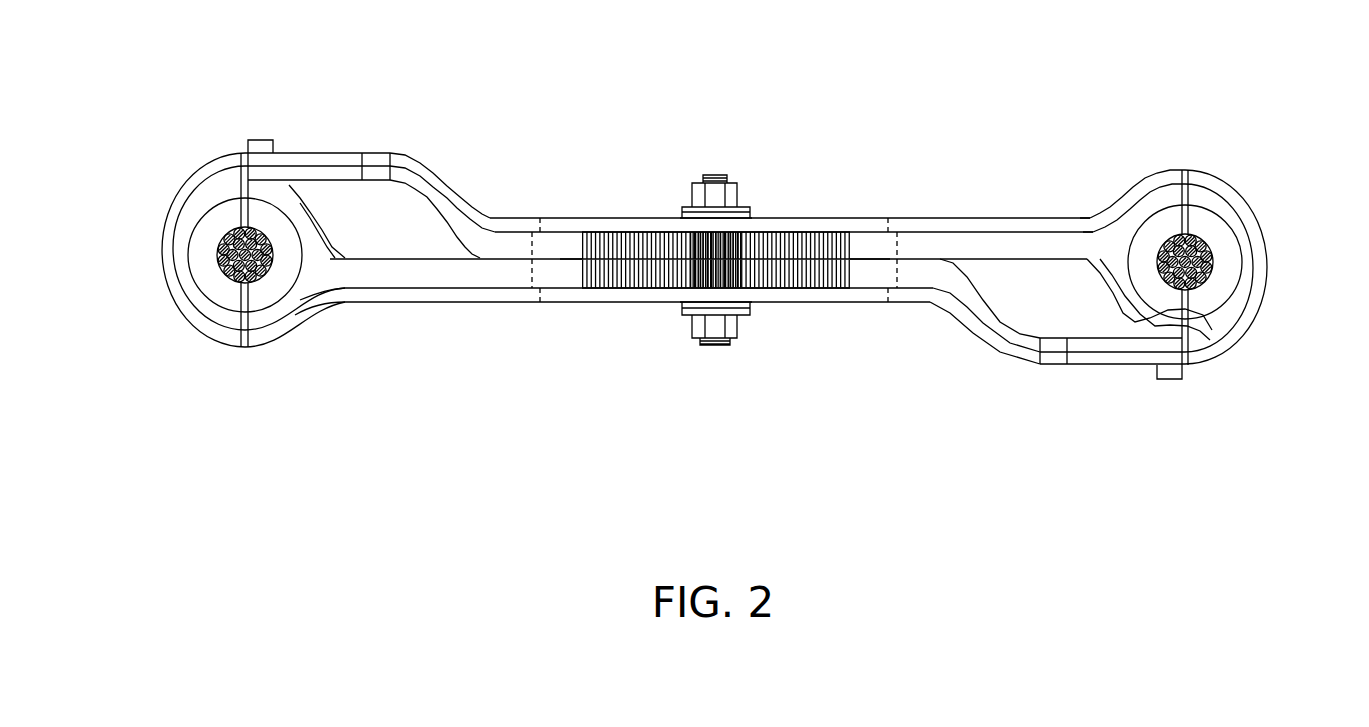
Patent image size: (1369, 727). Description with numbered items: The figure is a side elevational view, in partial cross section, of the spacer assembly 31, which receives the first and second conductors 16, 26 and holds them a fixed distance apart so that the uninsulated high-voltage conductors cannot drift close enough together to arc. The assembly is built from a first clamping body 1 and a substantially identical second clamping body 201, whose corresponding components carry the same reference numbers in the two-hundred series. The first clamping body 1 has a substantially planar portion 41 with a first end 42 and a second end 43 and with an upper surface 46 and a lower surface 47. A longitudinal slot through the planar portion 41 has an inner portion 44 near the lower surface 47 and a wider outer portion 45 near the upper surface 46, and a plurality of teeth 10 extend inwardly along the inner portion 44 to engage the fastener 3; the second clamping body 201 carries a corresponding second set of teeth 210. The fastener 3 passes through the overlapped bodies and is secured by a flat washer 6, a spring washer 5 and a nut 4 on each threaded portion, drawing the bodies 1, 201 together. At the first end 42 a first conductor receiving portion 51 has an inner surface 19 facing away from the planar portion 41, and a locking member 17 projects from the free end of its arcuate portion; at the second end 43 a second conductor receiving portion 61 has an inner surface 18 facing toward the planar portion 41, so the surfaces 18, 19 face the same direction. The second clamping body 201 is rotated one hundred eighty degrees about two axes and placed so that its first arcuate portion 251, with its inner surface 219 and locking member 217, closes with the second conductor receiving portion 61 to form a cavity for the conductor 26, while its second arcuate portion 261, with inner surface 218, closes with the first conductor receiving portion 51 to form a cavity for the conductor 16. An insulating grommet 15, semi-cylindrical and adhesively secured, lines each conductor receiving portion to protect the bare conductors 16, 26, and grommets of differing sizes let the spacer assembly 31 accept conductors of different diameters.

The first clamping body 1 is at (963, 240).
The fastener 3 is at (726, 163).
The nut 4 is at (738, 195).
The spring washer 5 is at (750, 210).
The flat washer 6 is at (748, 218).
The teeth 10 is at (827, 240).
The insulating grommet 15 is at (287, 217).
The first conductor 16 is at (1208, 283).
The locking member 17 is at (1166, 393).
The inner surface 18 is at (186, 217).
The inner surface 19 is at (1200, 316).
The second conductor 26 is at (263, 285).
The spacer assembly 31 is at (630, 357).
The planar portion 41 is at (593, 217).
The first end 42 is at (1093, 228).
The second end 43 is at (513, 217).
The inner portion 44 is at (492, 215).
The outer portion 45 is at (530, 229).
The upper surface 46 is at (649, 217).
The lower surface 47 is at (507, 252).
The first conductor receiving portion 51 is at (1134, 170).
The second conductor receiving portion 61 is at (195, 166).
The second clamping body 201 is at (928, 292).
The second set of teeth 210 is at (803, 278).
The locking member 217 is at (258, 140).
The inner surface 218 is at (1250, 240).
The inner surface 219 is at (237, 315).
The first arcuate portion 251 is at (314, 322).
The second arcuate portion 261 is at (1272, 306).